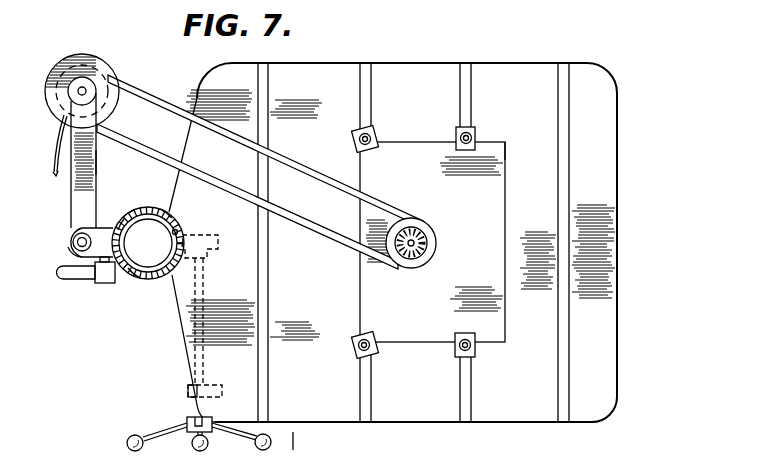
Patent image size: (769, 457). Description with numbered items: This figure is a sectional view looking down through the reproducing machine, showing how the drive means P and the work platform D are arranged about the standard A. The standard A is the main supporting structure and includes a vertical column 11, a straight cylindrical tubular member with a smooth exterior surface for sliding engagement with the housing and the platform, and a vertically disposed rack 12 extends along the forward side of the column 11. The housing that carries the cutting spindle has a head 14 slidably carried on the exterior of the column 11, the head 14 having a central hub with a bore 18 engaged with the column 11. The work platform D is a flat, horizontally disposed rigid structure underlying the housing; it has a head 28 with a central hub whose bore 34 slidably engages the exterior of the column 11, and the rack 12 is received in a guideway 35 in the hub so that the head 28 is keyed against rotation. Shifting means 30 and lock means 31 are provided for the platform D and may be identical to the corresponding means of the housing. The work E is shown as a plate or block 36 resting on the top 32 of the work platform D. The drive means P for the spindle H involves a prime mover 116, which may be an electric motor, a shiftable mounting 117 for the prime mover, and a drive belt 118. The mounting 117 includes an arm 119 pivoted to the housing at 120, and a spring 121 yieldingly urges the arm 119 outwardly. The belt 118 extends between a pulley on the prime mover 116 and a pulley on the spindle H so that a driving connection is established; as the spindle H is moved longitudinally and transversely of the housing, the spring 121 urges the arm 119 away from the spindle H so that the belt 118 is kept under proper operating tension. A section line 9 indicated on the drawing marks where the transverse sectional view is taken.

The work platform D is at (617, 367).
The work E is at (505, 141).
The work cutting spindle H is at (433, 223).
The drive means P is at (119, 71).
The standard A is at (152, 280).
The section line 9 is at (296, 438).
The column 11 is at (132, 267).
The rack 12 is at (186, 237).
The head 14 is at (128, 216).
The bore 18 is at (128, 227).
The head 28 is at (164, 210).
The shifting means 30 is at (155, 427).
The lock means 31 is at (91, 282).
The top 32 is at (532, 208).
The bore 34 is at (176, 230).
The guideway 35 is at (212, 253).
The plate or block 36 is at (421, 150).
The prime mover 116 is at (97, 55).
The shiftable mounting 117 is at (74, 207).
The drive belt 118 is at (310, 168).
The arm 119 is at (92, 160).
The pivot 120 is at (72, 242).
The spring 121 is at (68, 250).